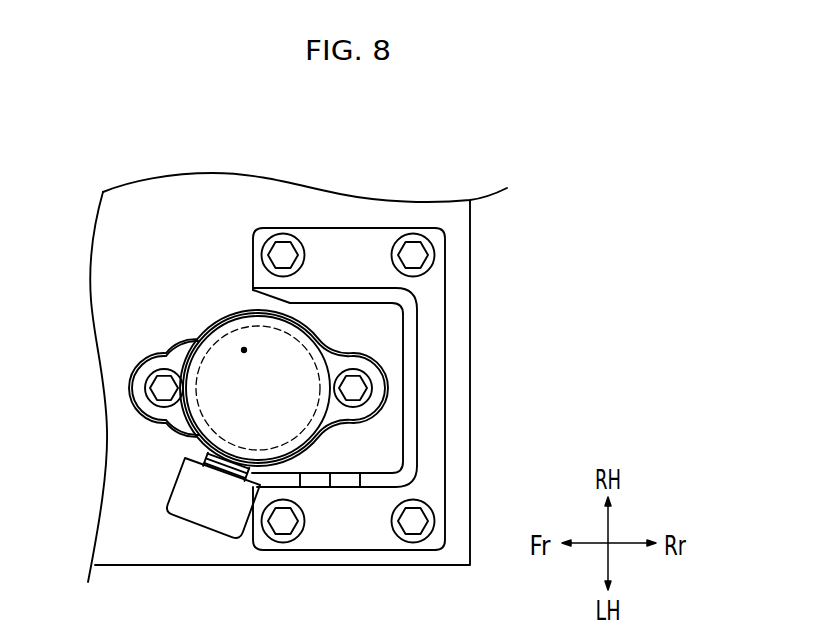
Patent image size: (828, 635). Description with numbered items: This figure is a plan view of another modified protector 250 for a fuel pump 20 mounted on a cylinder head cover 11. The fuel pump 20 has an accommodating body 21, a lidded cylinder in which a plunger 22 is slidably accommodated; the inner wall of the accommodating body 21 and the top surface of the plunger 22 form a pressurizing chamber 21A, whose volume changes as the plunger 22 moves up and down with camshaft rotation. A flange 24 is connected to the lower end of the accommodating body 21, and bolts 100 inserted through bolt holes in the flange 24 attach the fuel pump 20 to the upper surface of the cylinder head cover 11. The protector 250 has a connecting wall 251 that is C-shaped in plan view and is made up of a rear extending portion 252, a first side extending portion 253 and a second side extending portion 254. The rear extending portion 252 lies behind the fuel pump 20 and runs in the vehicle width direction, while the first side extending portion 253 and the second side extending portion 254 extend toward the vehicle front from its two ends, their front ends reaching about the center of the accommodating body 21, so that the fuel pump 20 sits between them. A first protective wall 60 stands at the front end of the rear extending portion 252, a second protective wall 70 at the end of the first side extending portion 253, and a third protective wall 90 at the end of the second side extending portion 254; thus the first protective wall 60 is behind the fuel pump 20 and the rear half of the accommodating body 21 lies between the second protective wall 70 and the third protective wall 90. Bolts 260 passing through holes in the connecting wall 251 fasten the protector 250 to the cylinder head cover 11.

The cylinder head cover 11 is at (448, 200).
The fuel pump 20 is at (156, 272).
The accommodating body 21 is at (181, 355).
The pressurizing chamber 21A is at (243, 348).
The plunger 22 is at (221, 337).
The flange 24 is at (177, 362).
The first protective wall 60 is at (413, 343).
The second protective wall 70 is at (345, 481).
The third protective wall 90 is at (330, 295).
The bolts 100 is at (162, 392).
The protector 250 is at (402, 382).
The connecting wall 251 is at (445, 363).
The rear extending portion 252 is at (433, 418).
The first side extending portion 253 is at (355, 537).
The second side extending portion 254 is at (343, 240).
The bolts 260 is at (283, 248).